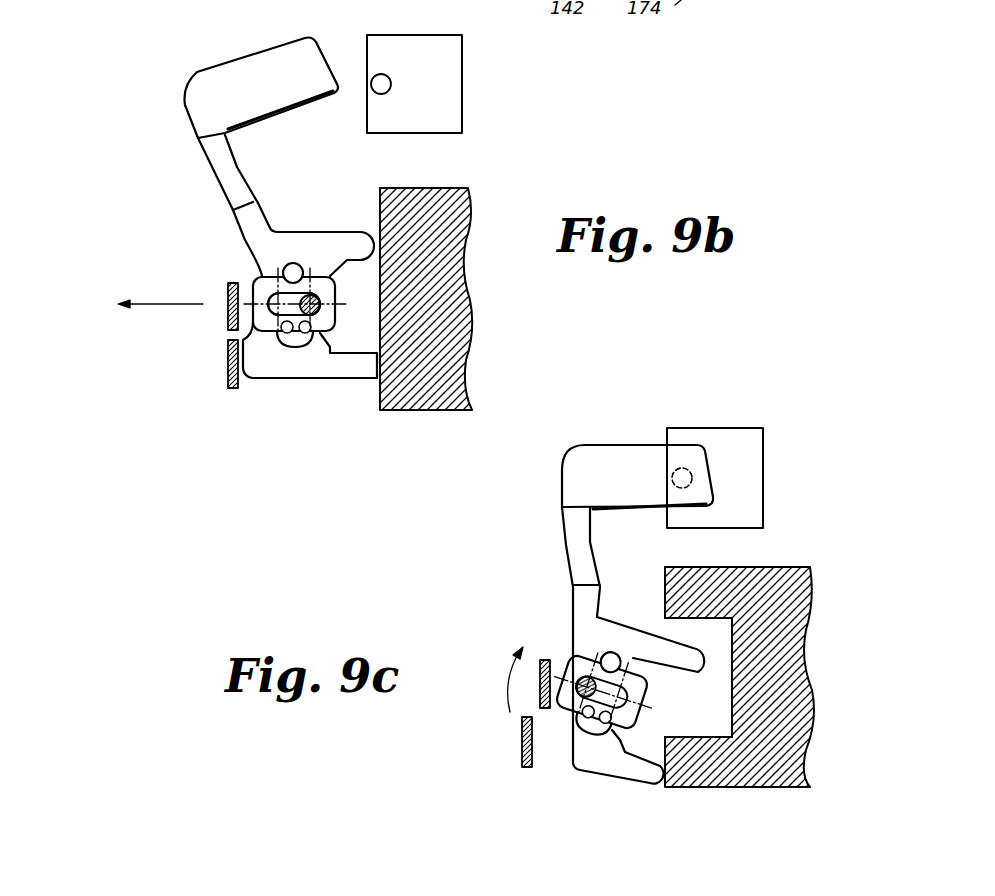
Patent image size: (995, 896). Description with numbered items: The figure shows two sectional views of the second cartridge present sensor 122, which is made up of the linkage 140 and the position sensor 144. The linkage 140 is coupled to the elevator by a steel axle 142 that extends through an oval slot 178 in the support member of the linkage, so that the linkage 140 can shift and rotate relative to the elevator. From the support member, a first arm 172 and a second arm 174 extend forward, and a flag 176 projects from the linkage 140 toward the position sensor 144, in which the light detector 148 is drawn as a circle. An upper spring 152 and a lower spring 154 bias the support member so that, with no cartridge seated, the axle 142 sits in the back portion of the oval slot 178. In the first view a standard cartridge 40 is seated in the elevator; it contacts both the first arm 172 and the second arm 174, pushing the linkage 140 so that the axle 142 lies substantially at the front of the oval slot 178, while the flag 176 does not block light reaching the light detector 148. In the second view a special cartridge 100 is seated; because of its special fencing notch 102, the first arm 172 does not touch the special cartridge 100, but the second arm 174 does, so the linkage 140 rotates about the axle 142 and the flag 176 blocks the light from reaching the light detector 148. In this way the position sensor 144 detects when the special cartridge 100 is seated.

In FIG. 9B, the standard cartridge 40 is at (432, 410).
In FIG. 9C, the special cartridge 100 is at (710, 788).
In FIG. 9C, the special fencing notch 102 is at (688, 715).
In FIG. 9B, the second cartridge present sensor 122 is at (162, 190).
In FIG. 9C, the second cartridge present sensor 122 is at (487, 558).
In FIG. 9B, the linkage 140 is at (180, 57).
In FIG. 9C, the linkage 140 is at (633, 428).
In FIG. 9B, the axle 142 is at (307, 313).
In FIG. 9C, the axle 142 is at (583, 692).
In FIG. 9B, the position sensor 144 is at (480, 72).
In FIG. 9C, the position sensor 144 is at (786, 466).
In FIG. 9B, the light detector 148 is at (389, 80).
In FIG. 9C, the light detector 148 is at (691, 471).
In FIG. 9B, the upper spring 152 is at (225, 320).
In FIG. 9C, the upper spring 152 is at (552, 680).
In FIG. 9B, the lower spring 154 is at (226, 370).
In FIG. 9C, the lower spring 154 is at (522, 741).
In FIG. 9B, the first arm 172 is at (352, 230).
In FIG. 9B, the second arm 174 is at (343, 380).
In FIG. 9B, the flag 176 is at (268, 122).
In FIG. 9B, the oval slot 178 is at (262, 298).